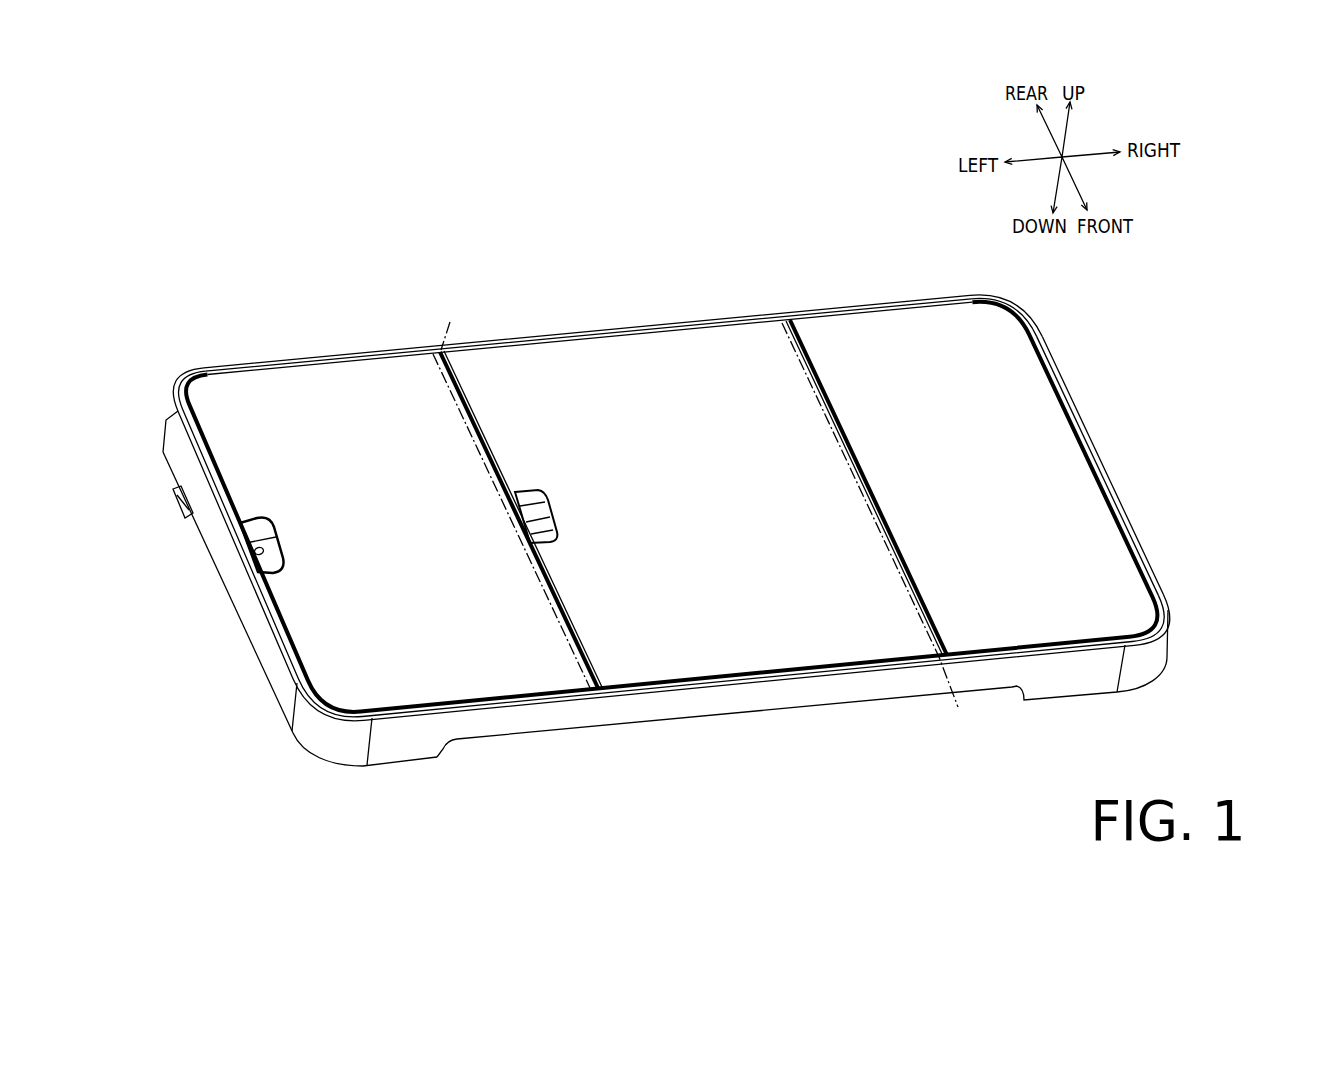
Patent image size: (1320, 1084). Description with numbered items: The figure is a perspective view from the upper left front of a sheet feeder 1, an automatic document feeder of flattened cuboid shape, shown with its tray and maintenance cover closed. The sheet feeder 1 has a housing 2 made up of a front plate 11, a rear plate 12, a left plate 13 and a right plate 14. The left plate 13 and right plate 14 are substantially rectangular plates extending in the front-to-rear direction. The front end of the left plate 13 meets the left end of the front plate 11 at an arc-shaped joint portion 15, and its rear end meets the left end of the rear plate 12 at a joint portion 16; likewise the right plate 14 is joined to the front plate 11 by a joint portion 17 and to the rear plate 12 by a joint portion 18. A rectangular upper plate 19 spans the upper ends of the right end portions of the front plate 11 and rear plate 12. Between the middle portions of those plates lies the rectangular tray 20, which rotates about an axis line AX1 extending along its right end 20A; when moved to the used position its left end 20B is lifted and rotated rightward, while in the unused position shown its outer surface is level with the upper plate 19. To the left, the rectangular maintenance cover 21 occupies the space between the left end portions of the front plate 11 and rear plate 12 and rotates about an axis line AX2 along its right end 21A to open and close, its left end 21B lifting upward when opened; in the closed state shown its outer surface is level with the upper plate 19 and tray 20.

The sheet feeder 1 is at (731, 821).
The housing 2 is at (417, 762).
The front plate 11 is at (1053, 683).
The rear plate 12 is at (512, 337).
The left plate 13 is at (255, 620).
The right plate 14 is at (1108, 470).
The joint portion 15 is at (337, 743).
The joint portion 16 is at (163, 428).
The joint portion 17 is at (1143, 663).
The joint portion 18 is at (1020, 302).
The upper plate 19 is at (1057, 421).
The tray 20 is at (638, 355).
The right end of the tray 20A is at (838, 473).
The left end of the tray 20B is at (566, 573).
The maintenance cover 21 is at (330, 385).
The right end of the maintenance cover 21A is at (513, 535).
The left end of the maintenance cover 21B is at (300, 635).
The axis line AX1 is at (955, 705).
The axis line AX2 is at (450, 322).